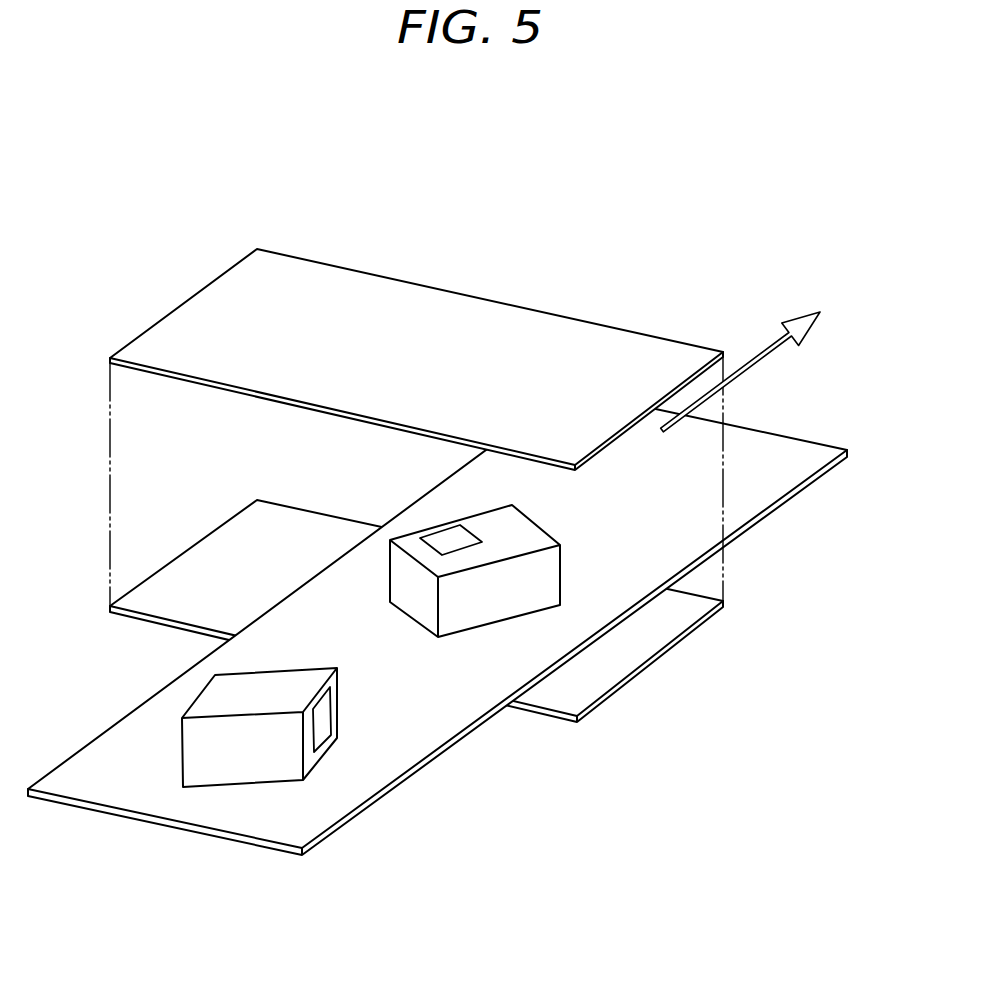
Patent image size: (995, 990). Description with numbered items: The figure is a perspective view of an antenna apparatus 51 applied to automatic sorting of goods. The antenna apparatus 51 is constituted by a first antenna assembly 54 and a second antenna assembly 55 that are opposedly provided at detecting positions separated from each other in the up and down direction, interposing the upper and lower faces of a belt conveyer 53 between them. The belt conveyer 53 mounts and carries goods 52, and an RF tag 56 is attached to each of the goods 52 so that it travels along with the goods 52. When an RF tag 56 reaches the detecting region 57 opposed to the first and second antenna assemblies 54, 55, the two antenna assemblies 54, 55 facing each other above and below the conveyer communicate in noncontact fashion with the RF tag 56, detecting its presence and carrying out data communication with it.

The antenna apparatus 51 is at (449, 484).
The goods 52 is at (499, 522).
The belt conveyer 53 is at (752, 490).
The first antenna assembly 54 is at (392, 277).
The second antenna assembly 55 is at (214, 550).
The RF tag 56 is at (439, 538).
The detecting region 57 is at (744, 406).